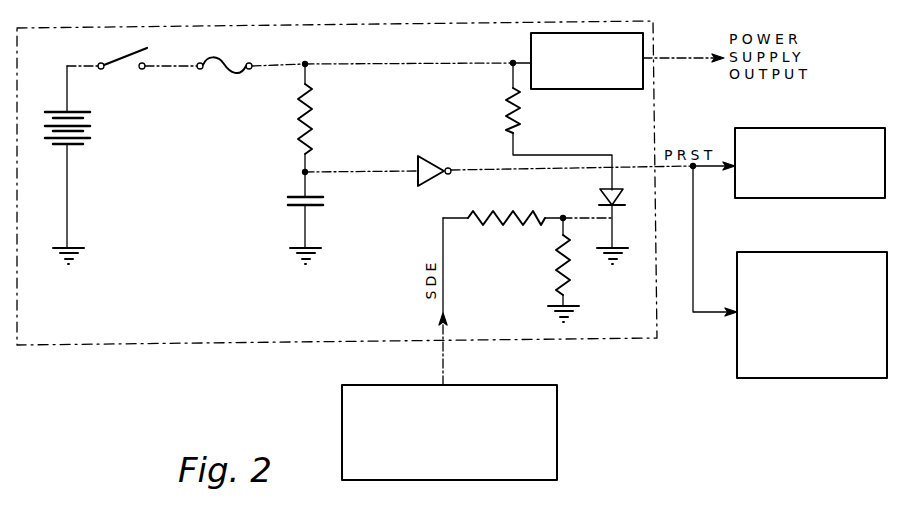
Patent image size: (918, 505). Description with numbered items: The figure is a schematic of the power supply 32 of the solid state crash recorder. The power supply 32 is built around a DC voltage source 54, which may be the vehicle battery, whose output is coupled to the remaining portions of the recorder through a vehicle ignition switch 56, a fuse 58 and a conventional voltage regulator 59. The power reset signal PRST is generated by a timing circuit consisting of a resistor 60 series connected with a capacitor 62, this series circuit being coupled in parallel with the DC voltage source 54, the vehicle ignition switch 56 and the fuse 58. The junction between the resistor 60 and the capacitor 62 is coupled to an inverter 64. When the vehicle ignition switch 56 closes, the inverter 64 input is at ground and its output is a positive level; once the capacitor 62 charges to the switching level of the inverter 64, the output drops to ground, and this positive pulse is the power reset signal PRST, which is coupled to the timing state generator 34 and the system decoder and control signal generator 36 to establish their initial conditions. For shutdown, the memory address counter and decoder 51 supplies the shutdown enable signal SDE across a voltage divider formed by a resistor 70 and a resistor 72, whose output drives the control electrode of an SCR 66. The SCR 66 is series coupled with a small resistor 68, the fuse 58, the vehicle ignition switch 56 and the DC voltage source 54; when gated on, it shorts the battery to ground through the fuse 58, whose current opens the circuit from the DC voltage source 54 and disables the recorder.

The power supply 32 is at (190, 343).
The timing state generator 34 is at (853, 134).
The system decoder and control signal generator 36 is at (797, 378).
The memory address counter and decoder 51 is at (493, 432).
The DC voltage source 54 is at (85, 139).
The vehicle ignition switch 56 is at (125, 56).
The fuse 58 is at (232, 72).
The voltage regulator 59 is at (530, 48).
The resistor 60 is at (290, 141).
The capacitor 62 is at (300, 208).
The inverter 64 is at (433, 161).
The SCR 66 is at (586, 191).
The small resistor 68 is at (520, 113).
The resistor 70 is at (492, 214).
The resistor 72 is at (557, 251).